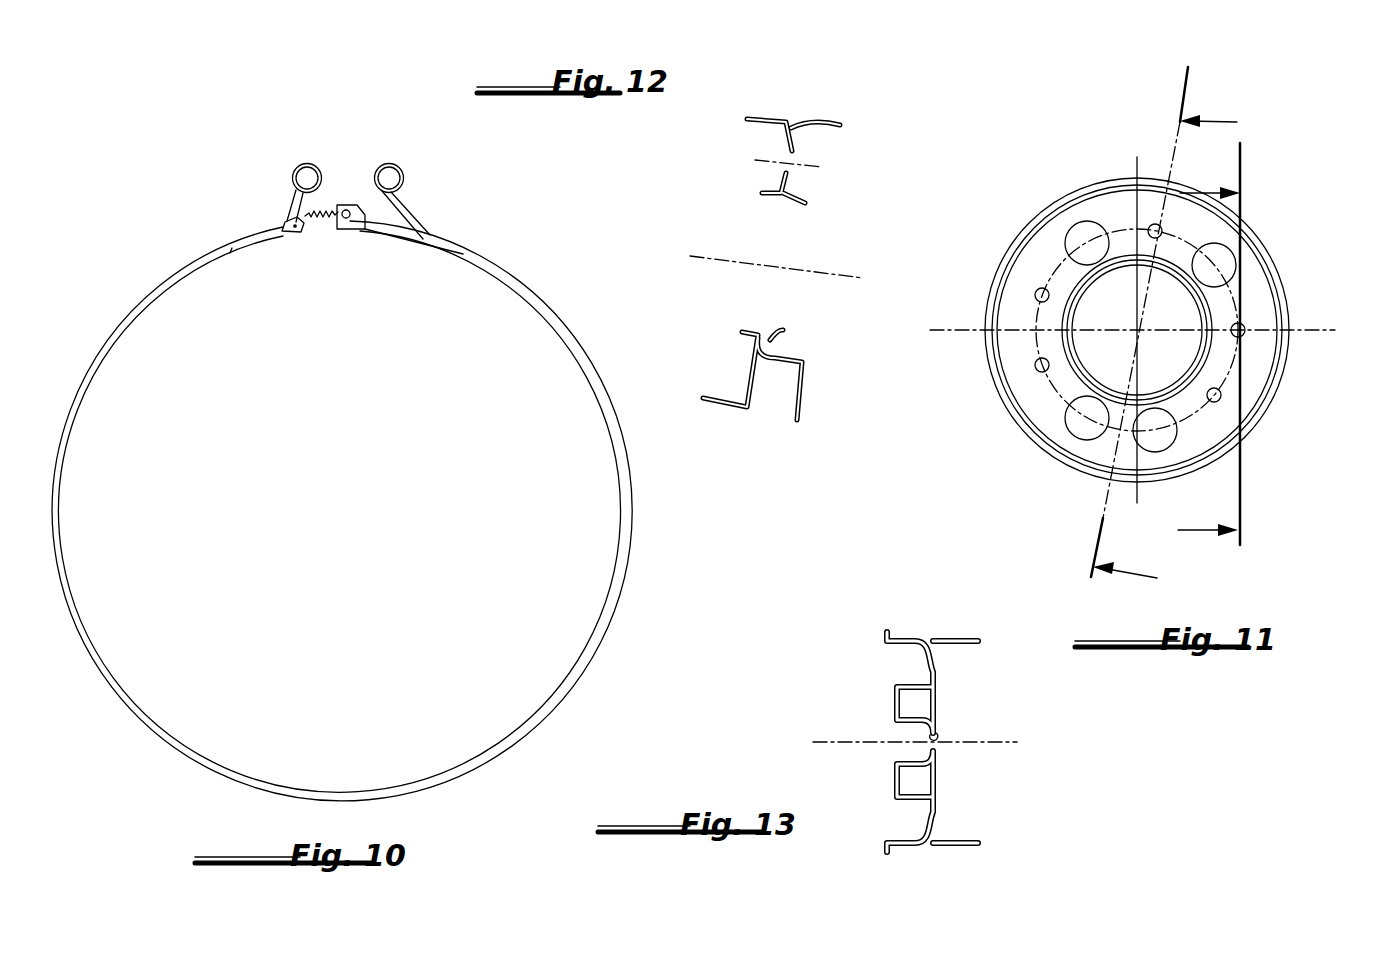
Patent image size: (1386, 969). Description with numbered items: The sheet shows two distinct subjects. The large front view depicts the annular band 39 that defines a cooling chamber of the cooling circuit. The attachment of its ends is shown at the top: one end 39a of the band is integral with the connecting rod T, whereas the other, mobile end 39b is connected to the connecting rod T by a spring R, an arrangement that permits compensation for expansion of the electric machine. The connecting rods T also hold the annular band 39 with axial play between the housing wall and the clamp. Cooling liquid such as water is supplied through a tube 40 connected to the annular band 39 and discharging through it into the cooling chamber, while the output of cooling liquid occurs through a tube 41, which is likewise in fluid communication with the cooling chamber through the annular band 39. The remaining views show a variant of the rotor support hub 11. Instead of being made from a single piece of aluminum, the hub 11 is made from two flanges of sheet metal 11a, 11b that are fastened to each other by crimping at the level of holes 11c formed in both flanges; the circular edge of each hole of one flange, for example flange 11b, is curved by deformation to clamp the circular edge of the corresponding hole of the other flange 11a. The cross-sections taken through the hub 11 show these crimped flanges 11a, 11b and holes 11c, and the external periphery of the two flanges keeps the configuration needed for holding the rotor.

In FIG. 12, the support hub 11 is at (738, 296).
In FIG. 11, the support hub 11 is at (1023, 216).
In FIG. 13, the support hub 11 is at (875, 675).
In FIG. 12, the flange 11a is at (805, 393).
In FIG. 13, the flange 11a is at (910, 638).
In FIG. 12, the flange 11b is at (760, 117).
In FIG. 13, the flange 11b is at (958, 843).
In FIG. 12, the holes 11c is at (790, 176).
In FIG. 11, the holes 11c is at (1155, 225).
In FIG. 13, the holes 11c is at (936, 732).
In FIG. 10, the annular band 39 is at (140, 283).
In FIG. 10, the end of the band 39a is at (378, 213).
In FIG. 10, the mobile end 39b is at (280, 226).
In FIG. 10, the tube 40 is at (404, 178).
In FIG. 10, the tube 41 is at (299, 164).
In FIG. 10, the spring R is at (318, 220).
In FIG. 10, the connecting rod T is at (347, 210).